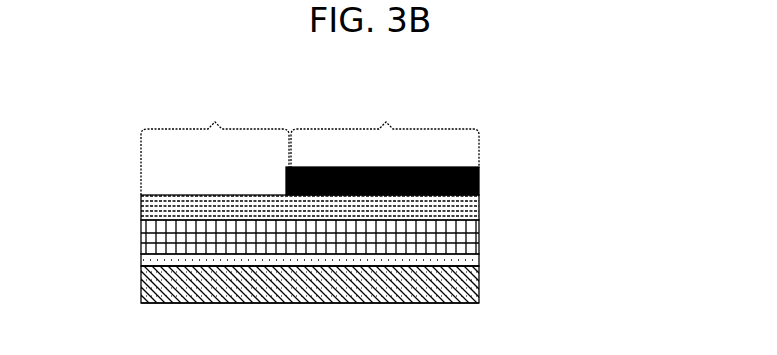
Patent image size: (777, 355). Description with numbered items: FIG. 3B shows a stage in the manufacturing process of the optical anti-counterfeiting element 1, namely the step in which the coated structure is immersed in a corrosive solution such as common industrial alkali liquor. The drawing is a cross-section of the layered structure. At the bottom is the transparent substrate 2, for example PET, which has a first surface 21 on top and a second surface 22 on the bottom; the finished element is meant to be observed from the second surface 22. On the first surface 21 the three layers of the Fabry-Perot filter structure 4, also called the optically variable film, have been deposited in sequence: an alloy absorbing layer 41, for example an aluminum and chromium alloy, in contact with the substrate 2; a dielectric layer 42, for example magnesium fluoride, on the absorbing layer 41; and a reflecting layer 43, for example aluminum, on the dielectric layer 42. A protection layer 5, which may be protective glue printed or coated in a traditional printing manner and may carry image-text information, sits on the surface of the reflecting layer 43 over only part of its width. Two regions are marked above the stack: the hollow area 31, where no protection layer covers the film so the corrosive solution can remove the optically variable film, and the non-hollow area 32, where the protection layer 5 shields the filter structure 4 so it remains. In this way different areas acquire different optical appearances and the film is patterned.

The optical anti-counterfeiting element 1 is at (374, 223).
The substrate 2 is at (308, 278).
The first surface 21 is at (137, 268).
The second surface 22 is at (137, 301).
The Fabry-Perot filter structure 4 is at (378, 232).
The absorbing layer 41 is at (462, 258).
The dielectric layer 42 is at (462, 236).
The reflecting layer 43 is at (462, 205).
The protection layer 5 is at (484, 176).
The hollow area 31 is at (215, 140).
The non-hollow area 32 is at (385, 127).